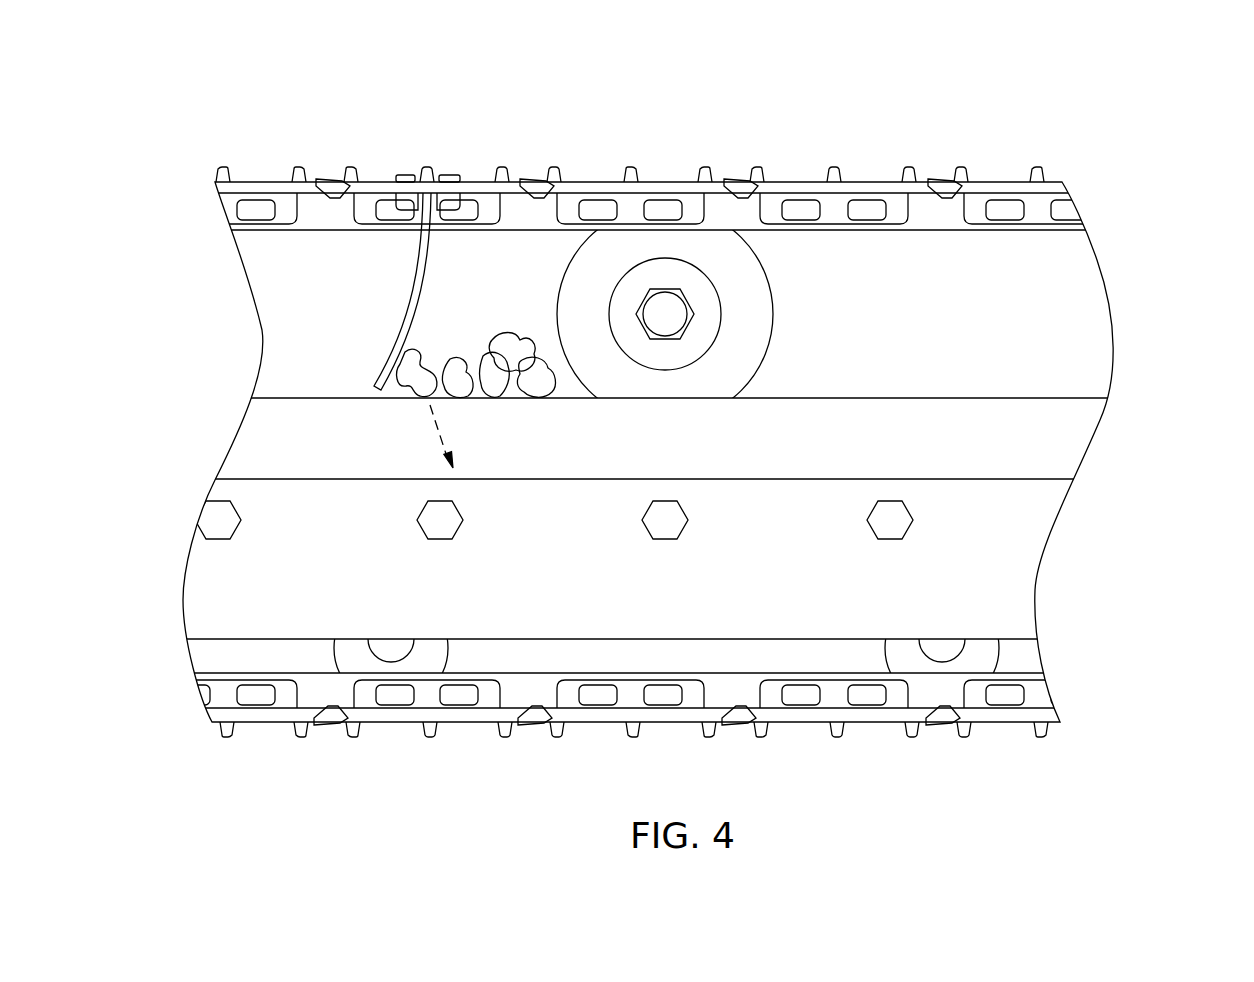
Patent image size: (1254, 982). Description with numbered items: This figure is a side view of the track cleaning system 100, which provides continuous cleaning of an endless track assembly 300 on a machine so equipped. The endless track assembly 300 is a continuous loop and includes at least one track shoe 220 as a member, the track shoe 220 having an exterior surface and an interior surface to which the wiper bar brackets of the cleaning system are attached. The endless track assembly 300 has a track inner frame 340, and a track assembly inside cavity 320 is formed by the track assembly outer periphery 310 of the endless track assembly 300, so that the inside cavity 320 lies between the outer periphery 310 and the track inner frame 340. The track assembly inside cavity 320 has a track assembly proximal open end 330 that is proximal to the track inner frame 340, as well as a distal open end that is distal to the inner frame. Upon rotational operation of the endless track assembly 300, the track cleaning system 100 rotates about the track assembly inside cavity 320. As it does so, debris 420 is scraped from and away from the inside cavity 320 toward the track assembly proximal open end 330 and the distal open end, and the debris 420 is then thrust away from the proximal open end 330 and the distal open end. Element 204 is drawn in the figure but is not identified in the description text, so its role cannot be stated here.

The track cleaning system 100 is at (366, 142).
The flexible strip 204 is at (412, 295).
The track shoe 220 is at (504, 178).
The endless track assembly 300 is at (991, 134).
The track assembly outer periphery 310 is at (667, 182).
The track assembly inside cavity 320 is at (988, 292).
The track assembly proximal open end 330 is at (1030, 397).
The track inner frame 340 is at (742, 450).
The debris 420 is at (498, 383).